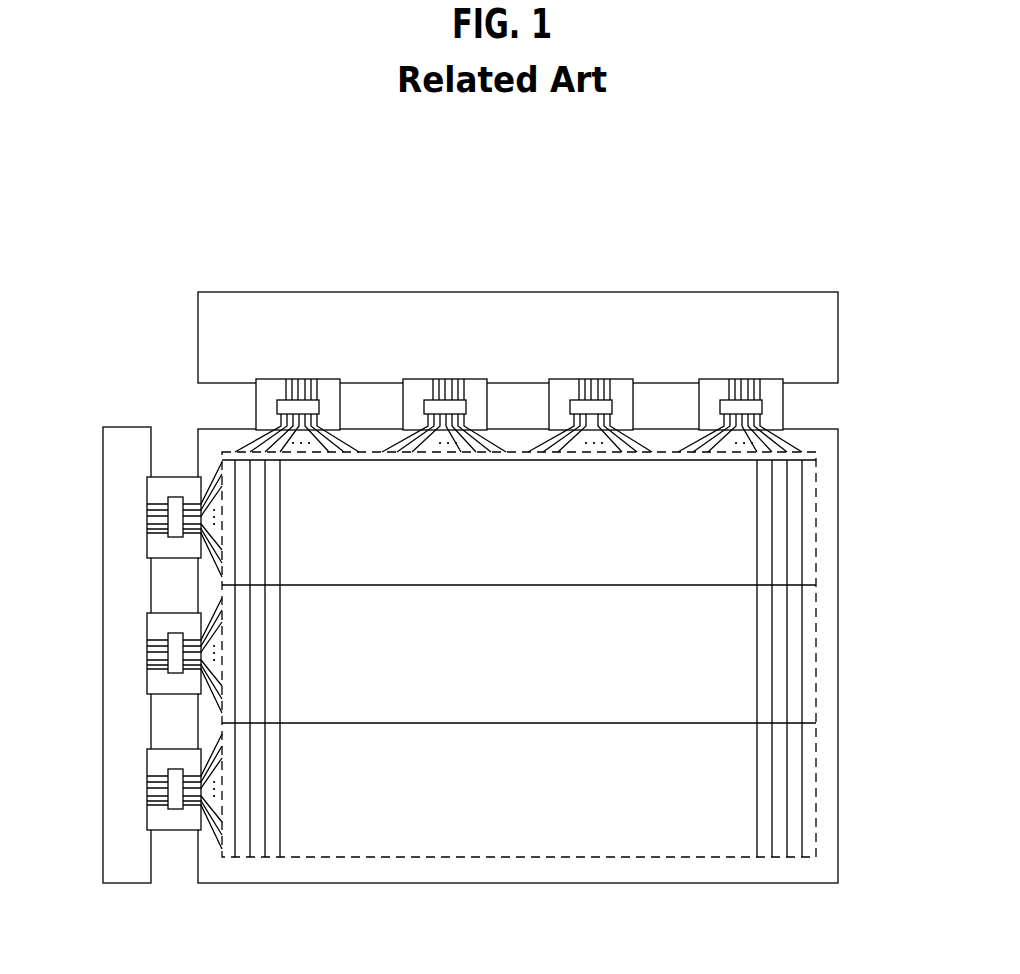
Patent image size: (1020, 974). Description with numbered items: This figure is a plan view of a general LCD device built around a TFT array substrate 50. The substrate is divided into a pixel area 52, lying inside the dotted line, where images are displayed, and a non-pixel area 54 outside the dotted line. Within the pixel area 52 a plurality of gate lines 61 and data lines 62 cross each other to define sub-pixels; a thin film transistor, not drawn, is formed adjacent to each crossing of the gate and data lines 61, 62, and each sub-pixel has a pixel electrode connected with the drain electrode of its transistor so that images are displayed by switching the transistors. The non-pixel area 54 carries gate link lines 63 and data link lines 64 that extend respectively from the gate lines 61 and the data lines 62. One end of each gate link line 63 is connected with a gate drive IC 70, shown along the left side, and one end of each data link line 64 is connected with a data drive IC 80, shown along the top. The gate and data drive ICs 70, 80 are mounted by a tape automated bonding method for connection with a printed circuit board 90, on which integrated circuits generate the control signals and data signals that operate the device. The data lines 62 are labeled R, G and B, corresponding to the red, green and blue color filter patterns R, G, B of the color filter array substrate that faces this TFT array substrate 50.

The TFT array substrate 50 is at (571, 656).
The pixel area 52 is at (898, 443).
The non-pixel area 54 is at (826, 443).
The gate line 61 is at (490, 724).
The data line 62 is at (281, 830).
The gate link line 63 is at (218, 745).
The data link line 64 is at (337, 437).
The gate drive IC 70 is at (176, 810).
The data drive IC 80 is at (279, 406).
The printed circuit board 90 is at (511, 305).
The blue color filter pattern B is at (236, 852).
The green color filter pattern G is at (251, 852).
The red color filter pattern R is at (266, 852).